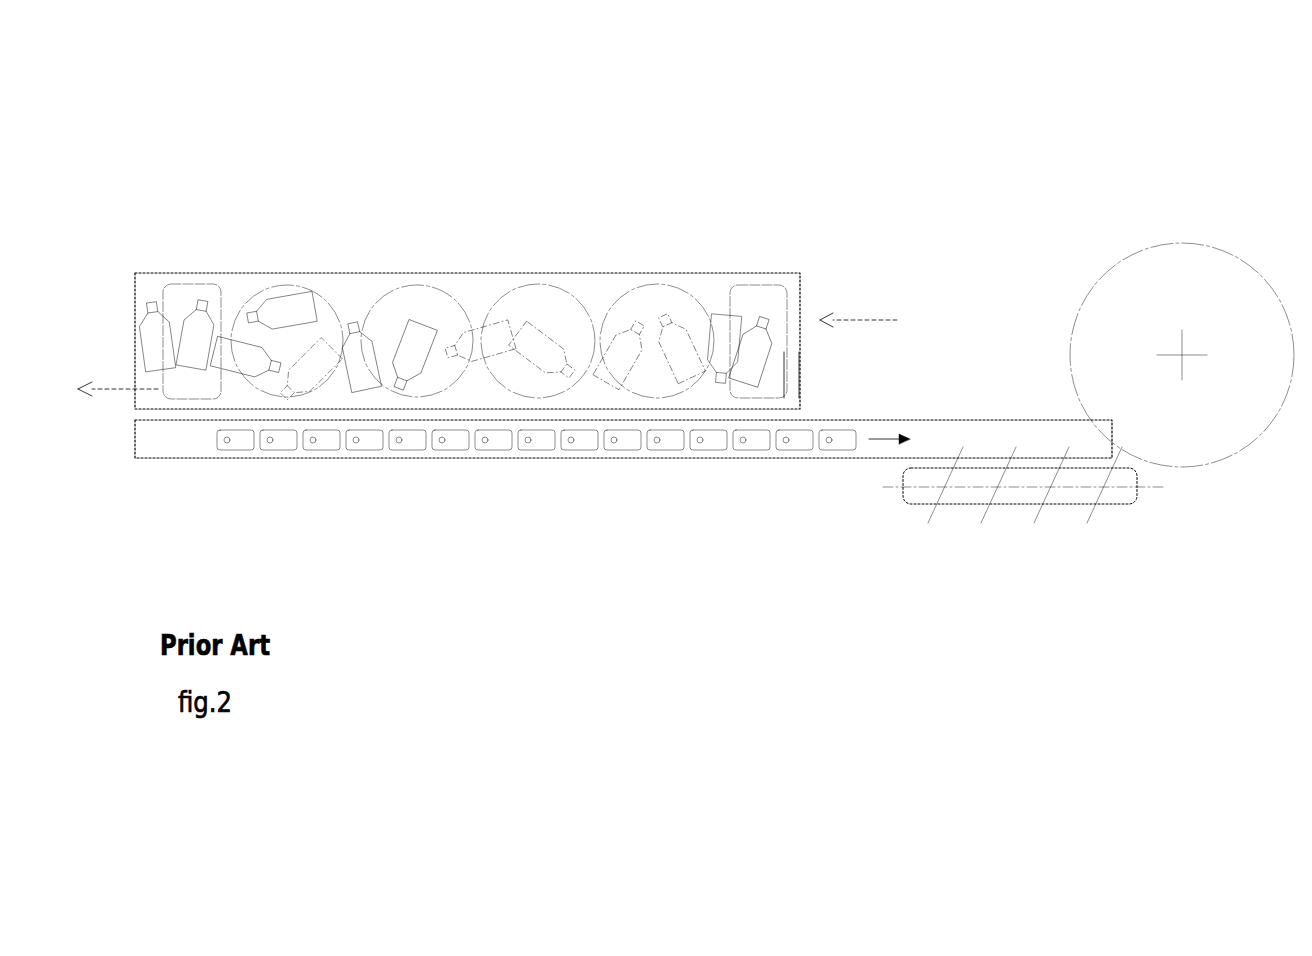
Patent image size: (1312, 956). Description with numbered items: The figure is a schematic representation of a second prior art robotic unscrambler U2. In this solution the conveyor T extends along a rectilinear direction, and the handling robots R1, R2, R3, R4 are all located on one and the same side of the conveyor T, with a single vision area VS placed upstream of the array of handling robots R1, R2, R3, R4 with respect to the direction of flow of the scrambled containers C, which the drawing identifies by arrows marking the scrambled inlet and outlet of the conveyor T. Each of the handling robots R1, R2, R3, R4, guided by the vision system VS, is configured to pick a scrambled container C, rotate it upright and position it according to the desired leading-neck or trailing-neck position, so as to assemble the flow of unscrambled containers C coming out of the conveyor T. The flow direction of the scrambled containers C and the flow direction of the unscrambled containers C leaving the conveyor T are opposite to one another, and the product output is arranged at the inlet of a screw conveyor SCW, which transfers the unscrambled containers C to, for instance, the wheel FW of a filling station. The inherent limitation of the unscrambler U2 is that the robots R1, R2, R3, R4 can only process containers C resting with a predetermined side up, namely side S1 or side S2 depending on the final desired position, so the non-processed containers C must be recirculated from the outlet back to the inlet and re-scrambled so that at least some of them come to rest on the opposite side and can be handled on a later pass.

The unscrambler U2 is at (943, 165).
The handling robot R1 is at (690, 300).
The handling robot R2 is at (570, 293).
The handling robot R3 is at (447, 290).
The handling robot R4 is at (330, 300).
The container side S1 is at (243, 347).
The container side S2 is at (147, 302).
The vision area VS is at (790, 303).
The containers C is at (253, 449).
The conveyor T is at (908, 436).
The screw conveyor SCW is at (1063, 493).
The wheel FW is at (1176, 243).